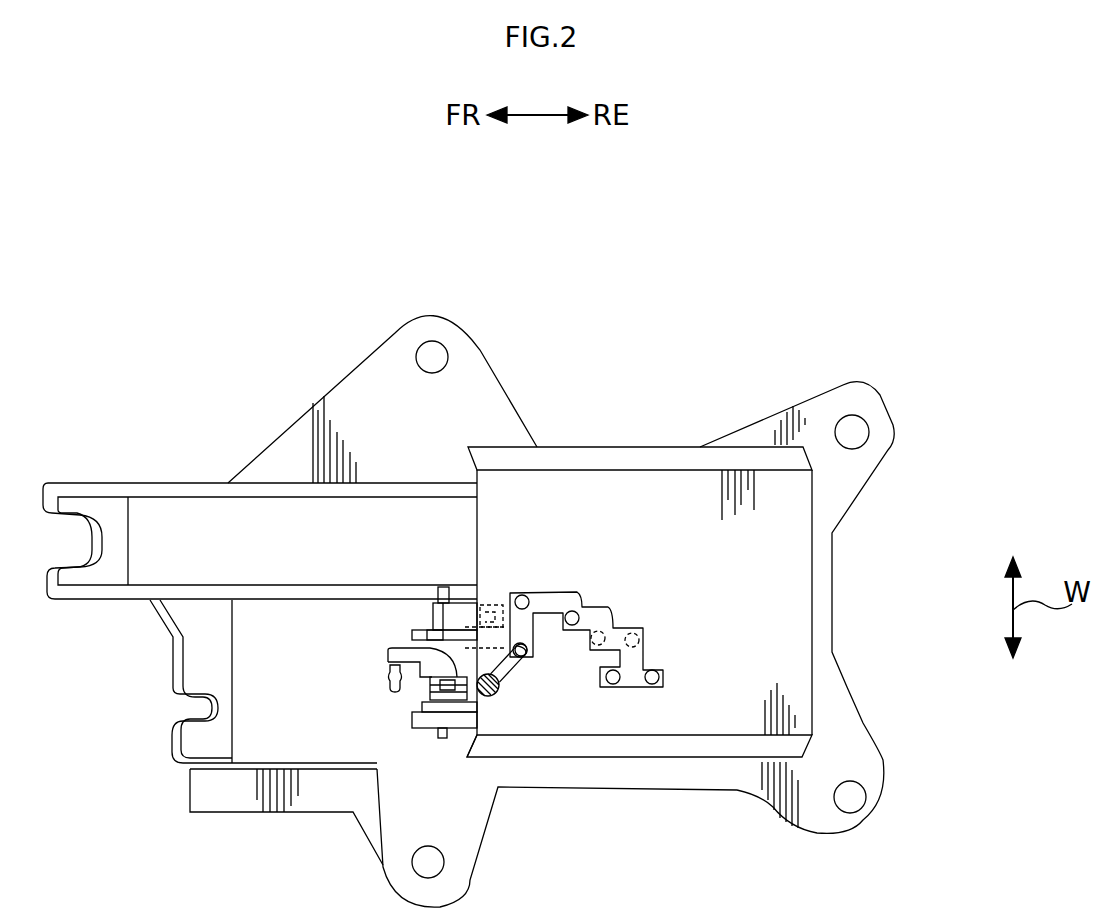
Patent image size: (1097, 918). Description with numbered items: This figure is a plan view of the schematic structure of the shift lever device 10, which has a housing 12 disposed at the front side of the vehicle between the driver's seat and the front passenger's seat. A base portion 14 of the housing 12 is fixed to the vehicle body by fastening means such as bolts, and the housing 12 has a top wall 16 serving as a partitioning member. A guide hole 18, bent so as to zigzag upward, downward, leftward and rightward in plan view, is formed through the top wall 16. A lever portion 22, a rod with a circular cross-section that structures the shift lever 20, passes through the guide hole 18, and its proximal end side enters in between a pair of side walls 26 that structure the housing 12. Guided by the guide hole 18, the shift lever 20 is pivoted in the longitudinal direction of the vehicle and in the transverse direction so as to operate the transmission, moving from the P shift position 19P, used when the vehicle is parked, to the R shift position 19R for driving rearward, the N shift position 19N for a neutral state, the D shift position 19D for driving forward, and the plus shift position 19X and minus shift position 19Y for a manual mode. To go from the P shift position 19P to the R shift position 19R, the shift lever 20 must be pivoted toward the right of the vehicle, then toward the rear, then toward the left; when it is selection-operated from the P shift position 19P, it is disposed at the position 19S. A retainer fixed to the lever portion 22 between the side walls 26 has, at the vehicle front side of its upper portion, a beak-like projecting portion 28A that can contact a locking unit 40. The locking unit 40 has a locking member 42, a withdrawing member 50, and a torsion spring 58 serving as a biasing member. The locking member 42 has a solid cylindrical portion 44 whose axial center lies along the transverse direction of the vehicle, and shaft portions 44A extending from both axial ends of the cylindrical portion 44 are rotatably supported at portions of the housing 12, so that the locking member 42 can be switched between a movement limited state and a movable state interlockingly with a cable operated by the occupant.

The shift lever device 10 is at (737, 268).
The housing 12 is at (360, 363).
The base portion 14 is at (348, 400).
The top wall 16 is at (782, 555).
The guide hole 18 is at (622, 616).
The selection-operated position 19S is at (520, 597).
The R shift position 19R is at (572, 611).
The N shift position 19N is at (602, 630).
The D shift position 19D is at (643, 630).
The + shift position 19X is at (616, 688).
The − shift position 19Y is at (665, 680).
The P shift position 19P is at (528, 655).
The shift lever 20 is at (541, 744).
The lever portion 22 is at (505, 681).
The side walls 26 is at (655, 458).
The projecting portion 28A is at (478, 748).
The locking unit 40 is at (378, 679).
The locking member 42 is at (398, 642).
The cylindrical portion 44 is at (420, 693).
The shaft portions 44A is at (441, 587).
The withdrawing member 50 is at (412, 626).
The torsion spring 58 is at (430, 705).